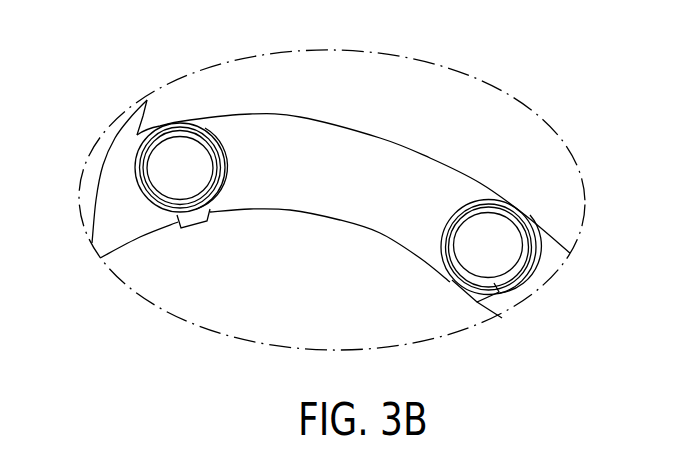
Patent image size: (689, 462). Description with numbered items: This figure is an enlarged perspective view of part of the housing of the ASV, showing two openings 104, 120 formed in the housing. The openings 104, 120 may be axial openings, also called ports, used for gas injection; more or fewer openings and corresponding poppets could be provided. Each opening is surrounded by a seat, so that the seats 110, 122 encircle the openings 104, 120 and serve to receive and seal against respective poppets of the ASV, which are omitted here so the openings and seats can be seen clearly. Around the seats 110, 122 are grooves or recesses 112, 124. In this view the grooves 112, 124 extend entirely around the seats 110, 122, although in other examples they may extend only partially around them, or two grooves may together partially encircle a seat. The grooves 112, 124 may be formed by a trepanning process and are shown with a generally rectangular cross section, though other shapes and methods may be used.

The opening 104 is at (488, 240).
The seat 110 is at (519, 220).
The groove 112 is at (447, 225).
The opening 120 is at (178, 167).
The seat 122 is at (211, 145).
The groove 124 is at (140, 149).